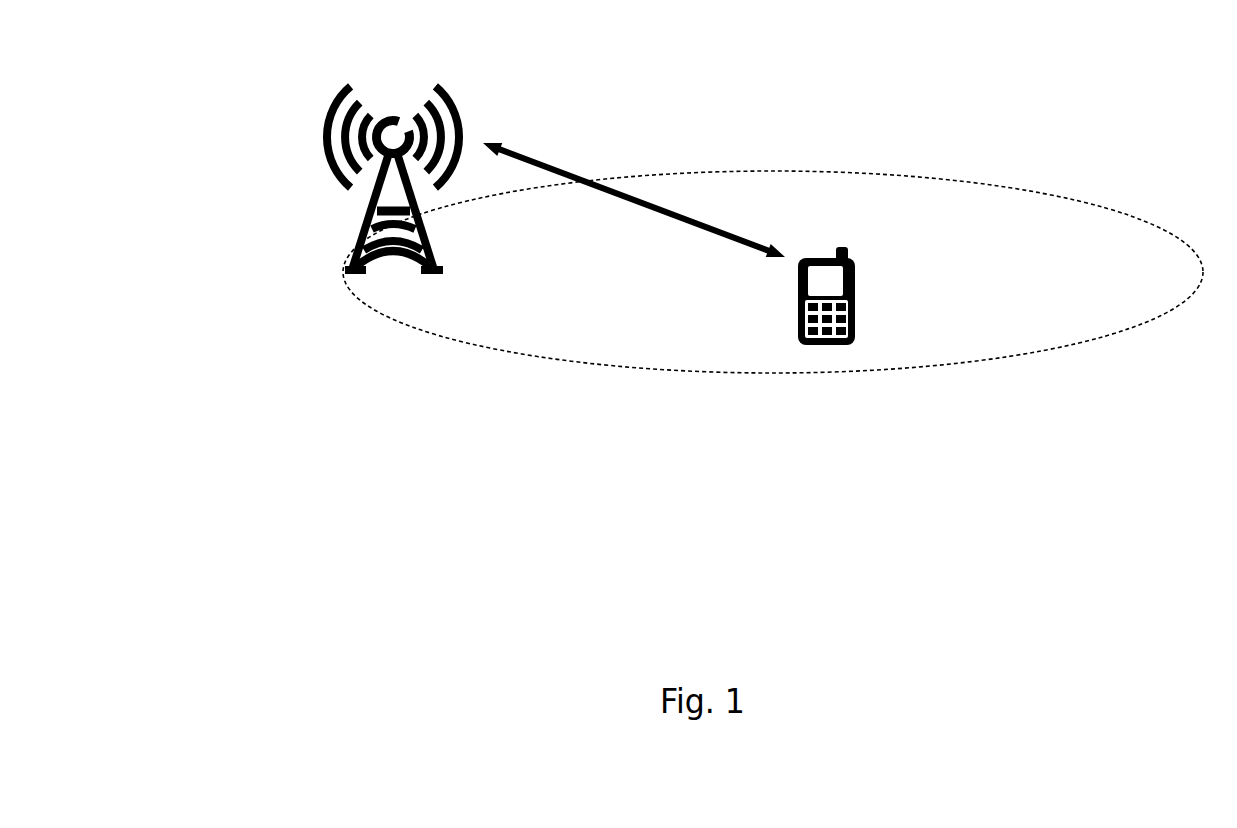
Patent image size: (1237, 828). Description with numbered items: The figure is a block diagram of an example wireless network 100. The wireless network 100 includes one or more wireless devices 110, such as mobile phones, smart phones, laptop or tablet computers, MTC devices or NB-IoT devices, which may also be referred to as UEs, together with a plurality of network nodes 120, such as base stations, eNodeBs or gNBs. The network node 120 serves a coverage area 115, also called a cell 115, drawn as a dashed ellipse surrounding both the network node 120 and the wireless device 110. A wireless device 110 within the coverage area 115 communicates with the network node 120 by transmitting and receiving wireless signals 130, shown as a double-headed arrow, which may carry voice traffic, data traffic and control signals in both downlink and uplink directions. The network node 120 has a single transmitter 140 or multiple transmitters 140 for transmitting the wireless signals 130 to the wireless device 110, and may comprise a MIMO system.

The wireless network 100 is at (625, 33).
The wireless device 110 is at (840, 342).
The coverage area 115 is at (773, 272).
The network node 120 is at (350, 237).
The wireless signals 130 is at (553, 170).
The transmitter 140 is at (393, 131).